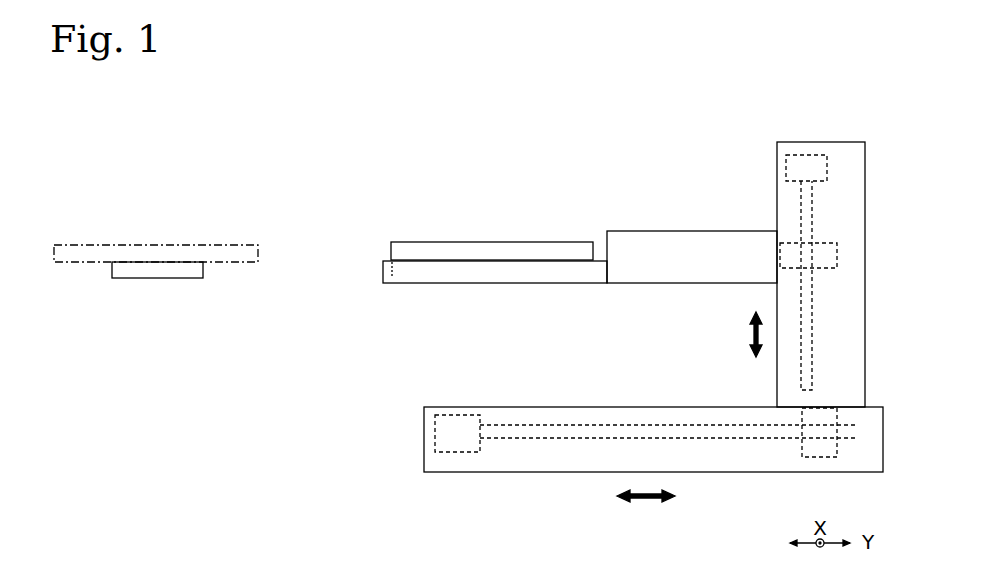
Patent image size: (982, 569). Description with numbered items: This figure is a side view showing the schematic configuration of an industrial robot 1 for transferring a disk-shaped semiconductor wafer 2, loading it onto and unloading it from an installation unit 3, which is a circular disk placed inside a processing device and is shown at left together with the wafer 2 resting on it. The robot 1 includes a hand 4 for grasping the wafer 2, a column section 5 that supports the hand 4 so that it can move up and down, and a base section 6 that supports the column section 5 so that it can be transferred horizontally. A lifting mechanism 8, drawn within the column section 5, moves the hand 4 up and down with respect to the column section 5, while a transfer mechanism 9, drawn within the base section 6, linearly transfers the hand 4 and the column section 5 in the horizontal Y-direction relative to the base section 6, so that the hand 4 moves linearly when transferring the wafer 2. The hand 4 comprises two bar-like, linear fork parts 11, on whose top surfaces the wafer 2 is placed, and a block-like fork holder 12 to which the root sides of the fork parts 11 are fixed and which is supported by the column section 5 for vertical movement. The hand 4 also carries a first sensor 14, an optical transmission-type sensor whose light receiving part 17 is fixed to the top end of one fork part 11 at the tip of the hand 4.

The industrial robot 1 is at (598, 136).
The semiconductor wafer 2 is at (145, 245).
The installation unit 3 is at (155, 279).
The hand 4 is at (580, 304).
The column section 5 is at (777, 186).
The base section 6 is at (500, 407).
The lifting mechanism 8 is at (848, 152).
The transfer mechanism 9 is at (445, 462).
The fork parts 11 is at (548, 283).
The fork holder 12 is at (692, 282).
The sensor 14 is at (378, 303).
The light receiving part 17 is at (383, 272).